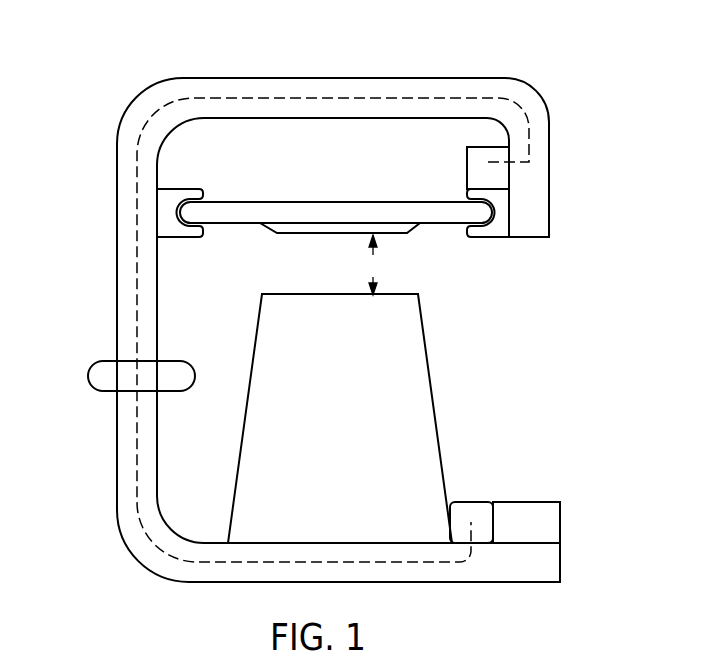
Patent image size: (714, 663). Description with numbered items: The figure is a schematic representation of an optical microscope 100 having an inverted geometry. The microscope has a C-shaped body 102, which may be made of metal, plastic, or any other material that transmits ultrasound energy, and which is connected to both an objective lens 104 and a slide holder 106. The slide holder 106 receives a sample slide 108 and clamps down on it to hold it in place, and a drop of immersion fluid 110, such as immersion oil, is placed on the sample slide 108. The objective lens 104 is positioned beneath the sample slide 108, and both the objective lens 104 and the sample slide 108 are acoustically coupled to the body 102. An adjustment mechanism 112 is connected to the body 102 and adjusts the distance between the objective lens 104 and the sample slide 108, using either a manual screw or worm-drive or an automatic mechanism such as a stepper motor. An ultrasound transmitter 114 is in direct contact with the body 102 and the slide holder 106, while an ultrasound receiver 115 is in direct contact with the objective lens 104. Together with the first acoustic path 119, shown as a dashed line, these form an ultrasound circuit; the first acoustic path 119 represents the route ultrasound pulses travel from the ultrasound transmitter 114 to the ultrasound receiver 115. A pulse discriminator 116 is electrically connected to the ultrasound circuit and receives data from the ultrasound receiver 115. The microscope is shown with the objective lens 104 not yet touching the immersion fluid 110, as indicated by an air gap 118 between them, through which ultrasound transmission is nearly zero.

The optical microscope 100 is at (543, 59).
The body 102 is at (131, 153).
The objective lens 104 is at (415, 410).
The slide holder 106 is at (167, 205).
The sample slide 108 is at (198, 215).
The immersion fluid 110 is at (278, 235).
The adjustment mechanism 112 is at (102, 373).
The ultrasound transmitter 114 is at (500, 175).
The ultrasound receiver 115 is at (467, 513).
The pulse discriminator 116 is at (548, 523).
The air gap 118 is at (375, 265).
The first acoustic path 119 is at (137, 480).